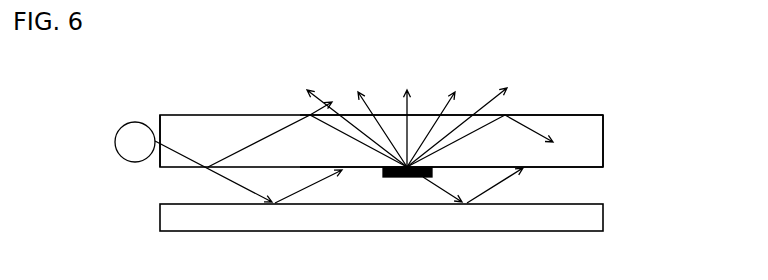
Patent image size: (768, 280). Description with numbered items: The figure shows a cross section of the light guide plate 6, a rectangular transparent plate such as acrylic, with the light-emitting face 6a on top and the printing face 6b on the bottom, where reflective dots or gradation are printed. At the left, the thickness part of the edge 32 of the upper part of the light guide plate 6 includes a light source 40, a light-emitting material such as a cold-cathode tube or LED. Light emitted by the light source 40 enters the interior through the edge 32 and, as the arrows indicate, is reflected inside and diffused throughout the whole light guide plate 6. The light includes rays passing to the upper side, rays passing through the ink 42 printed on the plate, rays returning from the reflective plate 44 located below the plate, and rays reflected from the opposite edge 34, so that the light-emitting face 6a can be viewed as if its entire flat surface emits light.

The light guide plate 6 is at (587, 148).
The light-emitting face 6a is at (563, 115).
The printing face 6b is at (563, 167).
The edge 32 is at (160, 115).
The edge 34 is at (603, 113).
The light source 40 is at (135, 148).
The ink 42 is at (398, 177).
The reflective plate 44 is at (592, 217).